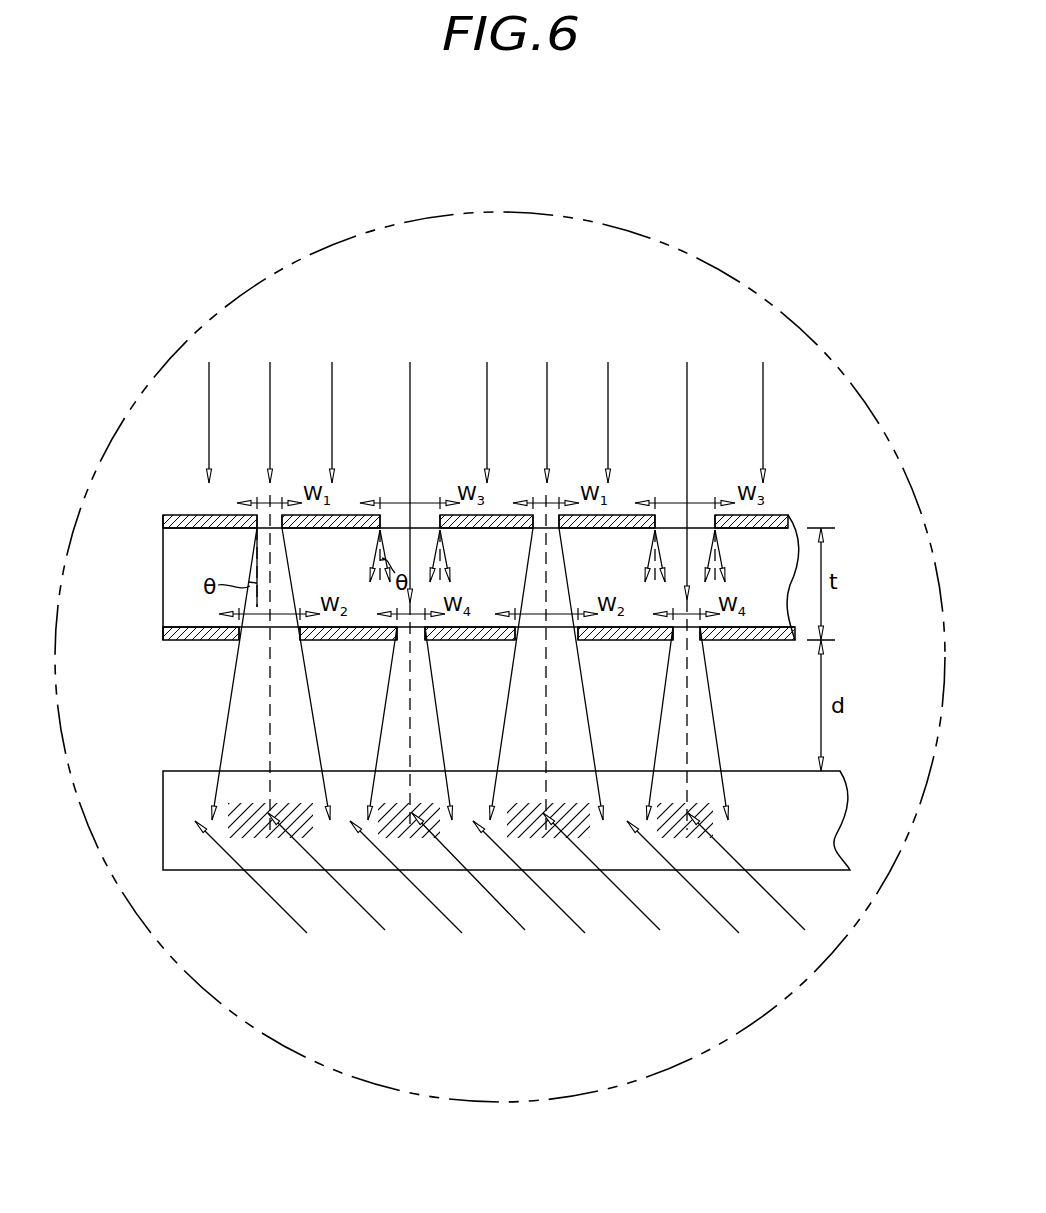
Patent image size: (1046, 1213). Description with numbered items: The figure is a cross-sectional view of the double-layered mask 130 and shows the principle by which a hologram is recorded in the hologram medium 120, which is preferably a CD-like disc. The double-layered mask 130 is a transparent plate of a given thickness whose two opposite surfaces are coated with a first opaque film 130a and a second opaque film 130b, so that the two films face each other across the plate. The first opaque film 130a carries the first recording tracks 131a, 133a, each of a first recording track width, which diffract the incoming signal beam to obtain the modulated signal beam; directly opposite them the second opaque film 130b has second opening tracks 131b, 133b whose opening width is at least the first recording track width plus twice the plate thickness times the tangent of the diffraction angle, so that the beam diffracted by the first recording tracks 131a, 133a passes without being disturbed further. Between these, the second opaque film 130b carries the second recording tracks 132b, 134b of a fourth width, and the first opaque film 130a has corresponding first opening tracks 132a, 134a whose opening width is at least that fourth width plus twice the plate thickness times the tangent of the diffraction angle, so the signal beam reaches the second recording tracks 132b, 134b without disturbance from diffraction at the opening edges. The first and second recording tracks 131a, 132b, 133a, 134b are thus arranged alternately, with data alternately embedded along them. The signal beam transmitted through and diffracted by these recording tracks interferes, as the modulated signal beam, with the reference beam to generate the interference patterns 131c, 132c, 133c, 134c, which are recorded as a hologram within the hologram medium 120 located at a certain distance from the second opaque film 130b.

The hologram medium 120 is at (163, 817).
The double-layered mask 130 is at (163, 578).
The first opaque film 130a is at (180, 513).
The second opaque film 130b is at (182, 641).
The first recording track 131a is at (282, 529).
The first opening track 132a is at (441, 530).
The first recording track 133a is at (560, 529).
The first opening track 134a is at (716, 529).
The second opening track 131b is at (300, 640).
The second recording track 132b is at (425, 640).
The second opening track 133b is at (578, 640).
The second recording track 134b is at (700, 640).
The interference pattern 131c is at (310, 835).
The interference pattern 132c is at (437, 835).
The interference pattern 133c is at (587, 835).
The interference pattern 134c is at (710, 835).